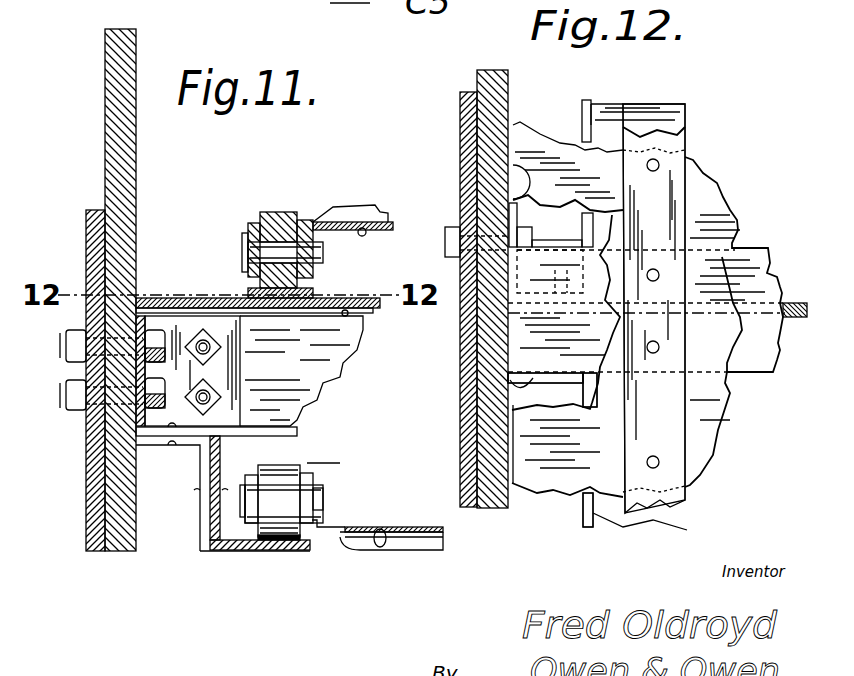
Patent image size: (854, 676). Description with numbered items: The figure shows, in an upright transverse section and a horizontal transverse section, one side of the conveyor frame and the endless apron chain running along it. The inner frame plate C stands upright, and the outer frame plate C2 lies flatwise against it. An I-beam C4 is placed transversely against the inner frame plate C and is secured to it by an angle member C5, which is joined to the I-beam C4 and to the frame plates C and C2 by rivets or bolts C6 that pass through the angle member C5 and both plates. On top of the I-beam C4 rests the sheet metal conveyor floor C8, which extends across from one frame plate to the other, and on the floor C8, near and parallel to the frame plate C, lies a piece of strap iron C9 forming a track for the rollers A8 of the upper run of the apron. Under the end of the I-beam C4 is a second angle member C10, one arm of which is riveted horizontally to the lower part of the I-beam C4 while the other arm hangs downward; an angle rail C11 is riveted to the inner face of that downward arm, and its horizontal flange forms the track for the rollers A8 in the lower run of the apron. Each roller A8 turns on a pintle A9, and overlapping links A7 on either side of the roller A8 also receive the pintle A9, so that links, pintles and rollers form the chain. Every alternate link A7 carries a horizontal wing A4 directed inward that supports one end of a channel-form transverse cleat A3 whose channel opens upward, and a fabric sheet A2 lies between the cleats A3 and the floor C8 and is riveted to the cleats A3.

In FIG. 11, the inner frame plate C is at (112, 123).
In FIG. 12, the inner frame plate C is at (480, 82).
In FIG. 11, the outer frame plate C2 is at (95, 243).
In FIG. 12, the outer frame plate C2 is at (461, 110).
In FIG. 11, the I-beam C4 is at (210, 400).
In FIG. 12, the I-beam C4 is at (747, 360).
In FIG. 11, the angle member C5 is at (173, 327).
In FIG. 12, the angle member C5 is at (520, 163).
In FIG. 11, the rivets or bolts C6 is at (62, 340).
In FIG. 12, the rivets or bolts C6 is at (446, 250).
In FIG. 11, the sheet metal conveyor floor C8 is at (157, 300).
In FIG. 12, the sheet metal conveyor floor C8 is at (700, 462).
In FIG. 11, the strap iron track C9 is at (248, 291).
In FIG. 12, the strap iron track C9 is at (654, 308).
In FIG. 11, the angle member C10 is at (206, 537).
In FIG. 12, the angle member C10 is at (510, 392).
In FIG. 11, the angle rail C11 is at (250, 550).
In FIG. 12, the angle rail C11 is at (672, 118).
In FIG. 11, the fabric sheet A2 is at (358, 232).
In FIG. 11, the transverse cleat A3 is at (373, 217).
In FIG. 11, the horizontal wing A4 is at (307, 217).
In FIG. 11, the overlapping links A7 is at (266, 212).
In FIG. 11, the roller A8 is at (265, 212).
In FIG. 11, the pintle A9 is at (245, 248).